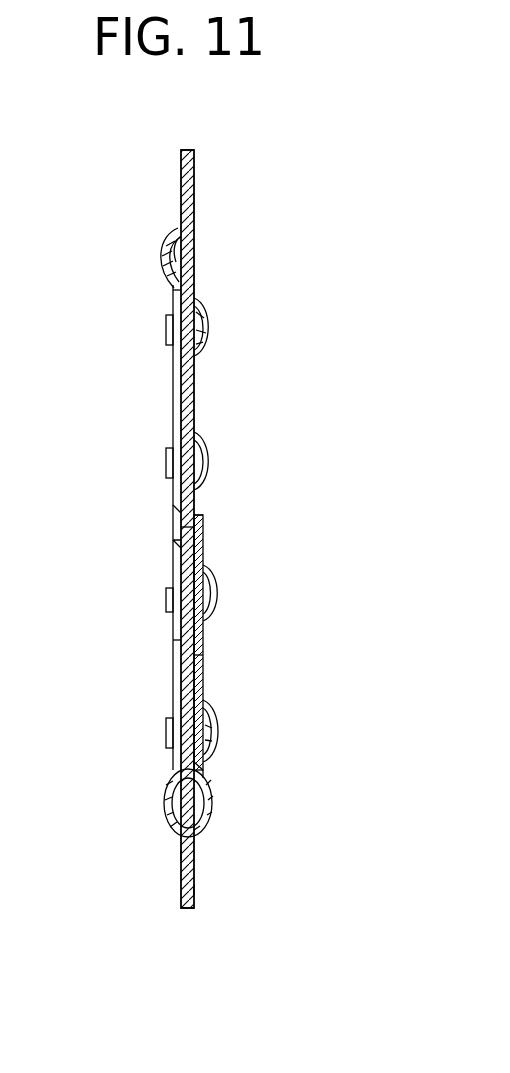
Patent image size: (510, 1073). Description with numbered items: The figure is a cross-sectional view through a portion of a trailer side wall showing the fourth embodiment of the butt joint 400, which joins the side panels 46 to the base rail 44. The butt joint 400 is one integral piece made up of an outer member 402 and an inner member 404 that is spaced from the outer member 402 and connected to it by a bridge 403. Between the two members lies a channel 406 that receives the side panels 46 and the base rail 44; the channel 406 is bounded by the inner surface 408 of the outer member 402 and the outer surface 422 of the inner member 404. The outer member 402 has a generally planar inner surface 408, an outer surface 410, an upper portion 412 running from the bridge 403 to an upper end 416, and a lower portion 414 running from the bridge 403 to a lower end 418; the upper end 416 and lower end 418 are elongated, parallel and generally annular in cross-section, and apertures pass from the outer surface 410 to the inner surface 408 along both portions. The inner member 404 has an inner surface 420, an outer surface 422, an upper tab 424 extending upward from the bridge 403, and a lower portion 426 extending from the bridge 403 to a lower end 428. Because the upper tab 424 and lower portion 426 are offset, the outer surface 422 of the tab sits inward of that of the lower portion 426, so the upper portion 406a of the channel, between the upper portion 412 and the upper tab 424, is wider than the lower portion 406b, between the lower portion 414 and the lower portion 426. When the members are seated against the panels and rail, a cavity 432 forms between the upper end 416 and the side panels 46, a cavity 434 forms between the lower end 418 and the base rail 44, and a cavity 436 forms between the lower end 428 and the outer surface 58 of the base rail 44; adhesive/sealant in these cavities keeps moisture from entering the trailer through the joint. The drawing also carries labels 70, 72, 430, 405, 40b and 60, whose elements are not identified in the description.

The substrate strip 70 is at (195, 214).
The top edge of strip 72 is at (181, 186).
The outer member 402 is at (172, 405).
The upper end 416 is at (160, 253).
The cavity 432 is at (190, 258).
The second bump 430 is at (208, 323).
The side panels 46 is at (196, 354).
The inner surface 408 is at (173, 298).
The outer surface 410 is at (168, 368).
The upper portion 412 is at (166, 440).
The inner member 404 is at (200, 686).
The bridge 403 is at (203, 530).
The upper tab 424 is at (203, 511).
The ledge 405 is at (176, 556).
The upper portion of the channel 406a is at (180, 513).
The pad 40b is at (178, 590).
The inner surface 420 is at (215, 612).
The lower portion of the channel 406b is at (175, 641).
The outer surface 422 is at (205, 656).
The channel 406 is at (215, 723).
The lower portion 414 is at (166, 733).
The butt joint 400 is at (136, 668).
The lower end 418 is at (165, 809).
The cavity 434 is at (165, 790).
The lower end 428 is at (212, 805).
The lower portion 426 is at (205, 763).
The cavity 436 is at (200, 826).
The base rail 44 is at (182, 855).
The outer surface 58 is at (195, 890).
The strip bottom end 60 is at (181, 900).